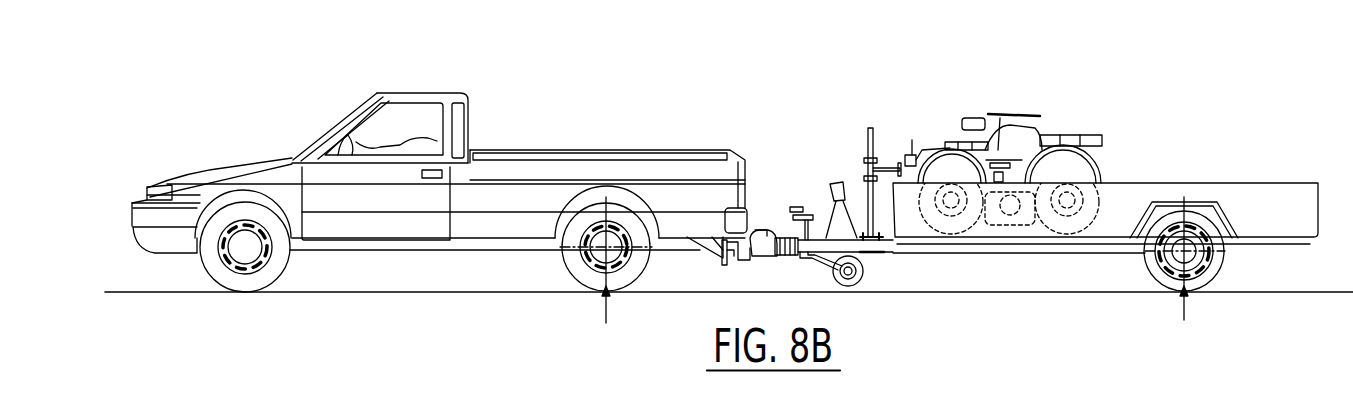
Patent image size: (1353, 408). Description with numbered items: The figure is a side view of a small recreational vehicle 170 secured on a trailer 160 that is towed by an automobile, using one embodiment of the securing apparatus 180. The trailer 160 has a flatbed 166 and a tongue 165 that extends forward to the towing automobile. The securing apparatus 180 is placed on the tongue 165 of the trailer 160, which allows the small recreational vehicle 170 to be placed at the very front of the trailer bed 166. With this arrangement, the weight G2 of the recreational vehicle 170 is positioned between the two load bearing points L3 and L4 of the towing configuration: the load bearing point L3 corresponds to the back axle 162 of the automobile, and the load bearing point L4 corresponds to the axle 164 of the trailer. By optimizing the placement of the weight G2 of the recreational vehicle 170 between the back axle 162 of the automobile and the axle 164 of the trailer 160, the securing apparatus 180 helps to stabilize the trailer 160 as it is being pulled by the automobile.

The trailer 160 is at (1109, 233).
The back axle 162 is at (606, 247).
The axle 164 is at (1184, 252).
The tongue 165 is at (853, 246).
The flatbed 166 is at (993, 237).
The small recreational vehicle 170 is at (1086, 127).
The securing apparatus 180 is at (878, 135).
The weight G2 is at (1015, 104).
The load bearing point L3 is at (607, 312).
The load bearing point L4 is at (1186, 312).